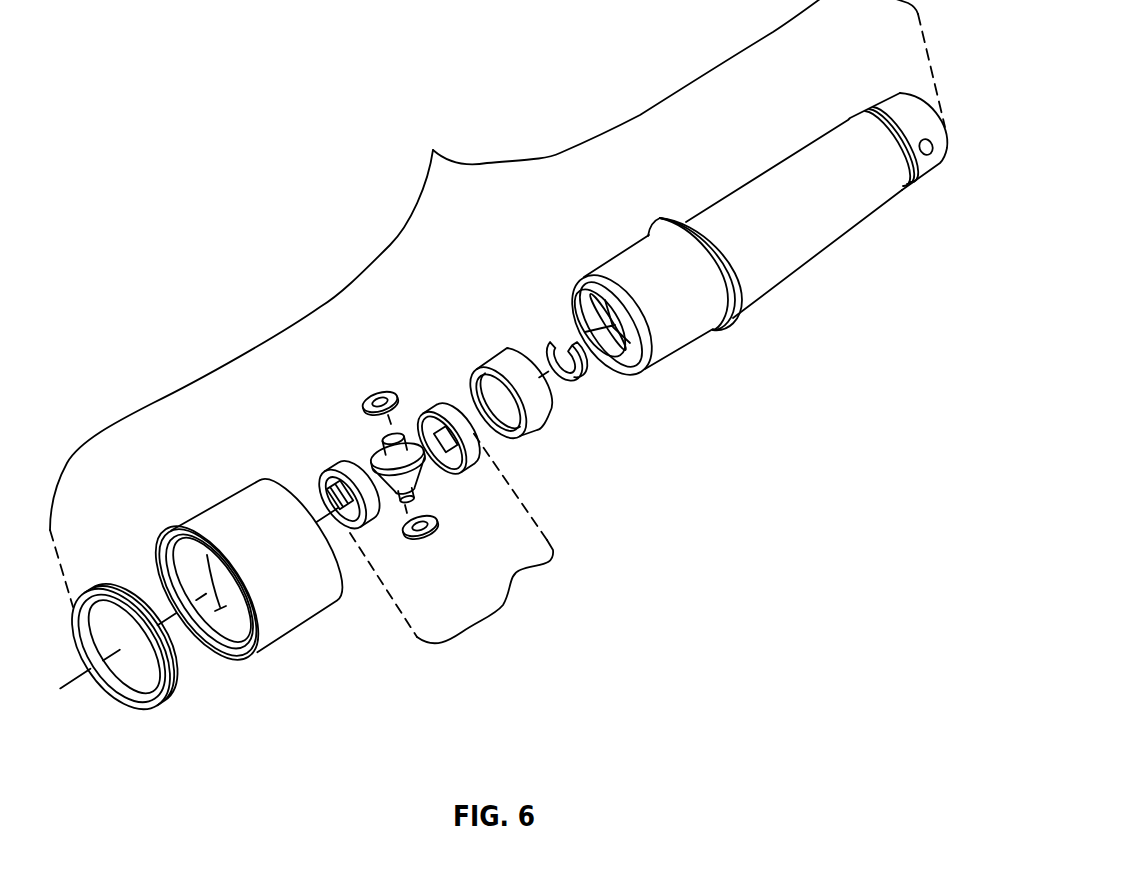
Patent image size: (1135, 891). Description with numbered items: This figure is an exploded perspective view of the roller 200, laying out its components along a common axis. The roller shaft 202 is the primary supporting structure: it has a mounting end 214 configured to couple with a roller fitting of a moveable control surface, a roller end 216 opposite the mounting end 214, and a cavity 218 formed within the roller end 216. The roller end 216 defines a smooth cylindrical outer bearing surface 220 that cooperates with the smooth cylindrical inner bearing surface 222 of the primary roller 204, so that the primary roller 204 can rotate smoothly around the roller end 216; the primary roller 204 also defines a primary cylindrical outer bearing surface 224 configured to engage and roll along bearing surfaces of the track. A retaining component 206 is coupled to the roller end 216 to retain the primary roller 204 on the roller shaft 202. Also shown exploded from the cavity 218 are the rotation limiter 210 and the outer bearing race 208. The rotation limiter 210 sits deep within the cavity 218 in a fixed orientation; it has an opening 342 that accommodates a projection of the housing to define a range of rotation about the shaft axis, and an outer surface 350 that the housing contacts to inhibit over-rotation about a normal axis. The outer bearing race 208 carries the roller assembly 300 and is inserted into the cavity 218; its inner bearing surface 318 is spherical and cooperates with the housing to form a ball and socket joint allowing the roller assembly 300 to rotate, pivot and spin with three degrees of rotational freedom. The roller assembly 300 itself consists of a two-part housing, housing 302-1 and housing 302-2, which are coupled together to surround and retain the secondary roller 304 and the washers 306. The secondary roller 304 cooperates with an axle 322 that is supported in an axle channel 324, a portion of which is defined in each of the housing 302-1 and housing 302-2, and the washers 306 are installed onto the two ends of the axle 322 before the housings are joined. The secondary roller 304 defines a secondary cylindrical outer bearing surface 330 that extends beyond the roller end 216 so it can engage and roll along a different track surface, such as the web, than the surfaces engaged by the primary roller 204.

The roller 200 is at (432, 148).
The roller shaft 202 is at (746, 217).
The primary roller 204 is at (246, 551).
The retaining component 206 is at (150, 706).
The outer bearing race 208 is at (514, 383).
The rotation limiter 210 is at (575, 390).
The mounting end 214 is at (816, 118).
The roller end 216 is at (610, 256).
The cavity 218 is at (577, 312).
The smooth cylindrical outer bearing surface 220 is at (679, 337).
The smooth cylindrical inner bearing surface 222 is at (179, 532).
The primary cylindrical outer bearing surface 224 is at (239, 514).
The roller assembly 300 is at (503, 607).
The housing 302-1 is at (330, 468).
The housing 302-2 is at (446, 400).
The secondary roller 304 is at (424, 513).
The washers 306 is at (379, 393).
The inner bearing surface 318 is at (490, 396).
The axle 322 is at (414, 505).
The axle channel 324 is at (393, 434).
The secondary cylindrical outer bearing surface 330 is at (415, 488).
The opening 342 is at (579, 345).
The outer surface 350 is at (582, 380).